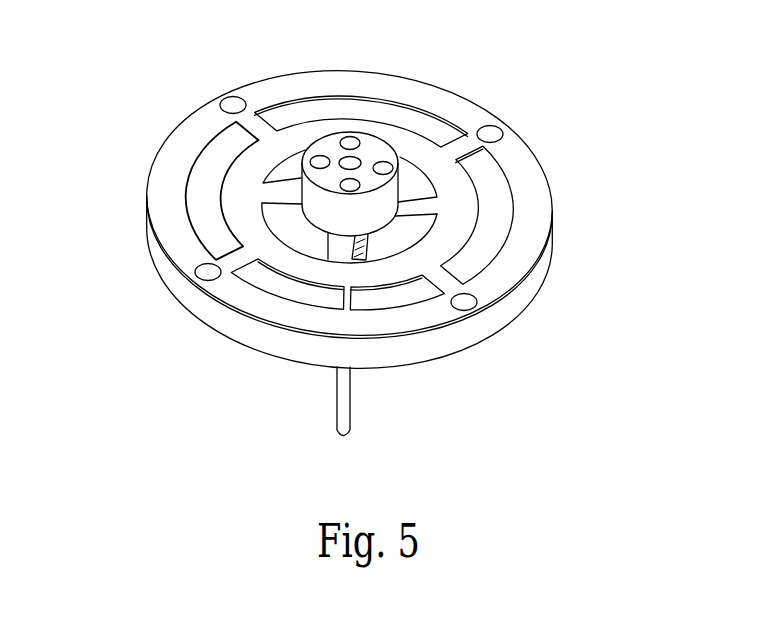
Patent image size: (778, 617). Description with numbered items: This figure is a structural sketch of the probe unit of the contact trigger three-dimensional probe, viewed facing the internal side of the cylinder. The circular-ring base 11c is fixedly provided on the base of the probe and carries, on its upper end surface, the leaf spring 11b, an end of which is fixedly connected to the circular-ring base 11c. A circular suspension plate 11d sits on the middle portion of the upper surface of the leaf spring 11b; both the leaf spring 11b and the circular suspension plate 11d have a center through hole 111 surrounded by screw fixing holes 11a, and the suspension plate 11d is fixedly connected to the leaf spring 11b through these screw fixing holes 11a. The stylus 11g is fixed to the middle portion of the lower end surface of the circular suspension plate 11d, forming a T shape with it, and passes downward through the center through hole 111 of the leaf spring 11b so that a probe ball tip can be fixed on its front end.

The screw fixing hole 11a is at (357, 167).
The leaf spring 11b is at (532, 177).
The circular-ring base 11c is at (525, 293).
The circular suspension plate 11d is at (333, 150).
The center through hole 111 is at (340, 167).
The stylus 11g is at (350, 388).